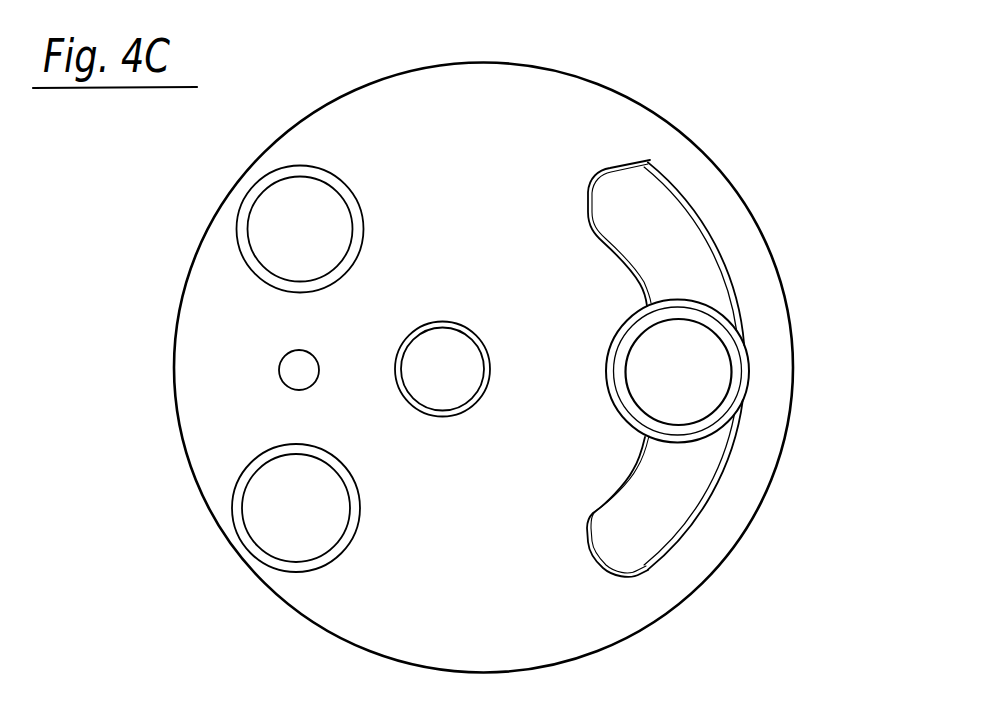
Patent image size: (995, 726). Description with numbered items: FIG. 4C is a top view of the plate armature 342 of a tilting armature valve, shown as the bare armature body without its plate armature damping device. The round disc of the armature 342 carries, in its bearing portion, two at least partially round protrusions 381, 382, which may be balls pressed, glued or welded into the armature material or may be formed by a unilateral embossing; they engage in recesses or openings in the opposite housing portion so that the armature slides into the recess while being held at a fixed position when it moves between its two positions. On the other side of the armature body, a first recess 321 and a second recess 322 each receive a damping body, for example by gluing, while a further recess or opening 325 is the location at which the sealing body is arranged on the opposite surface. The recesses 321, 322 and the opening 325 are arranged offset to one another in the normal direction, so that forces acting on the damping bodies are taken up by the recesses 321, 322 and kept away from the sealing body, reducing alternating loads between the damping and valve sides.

The armature 342 is at (635, 101).
The protrusion 381 is at (278, 203).
The protrusion 382 is at (282, 517).
The first recess 321 is at (682, 238).
The second recess 322 is at (677, 503).
The recess or opening 325 is at (720, 378).